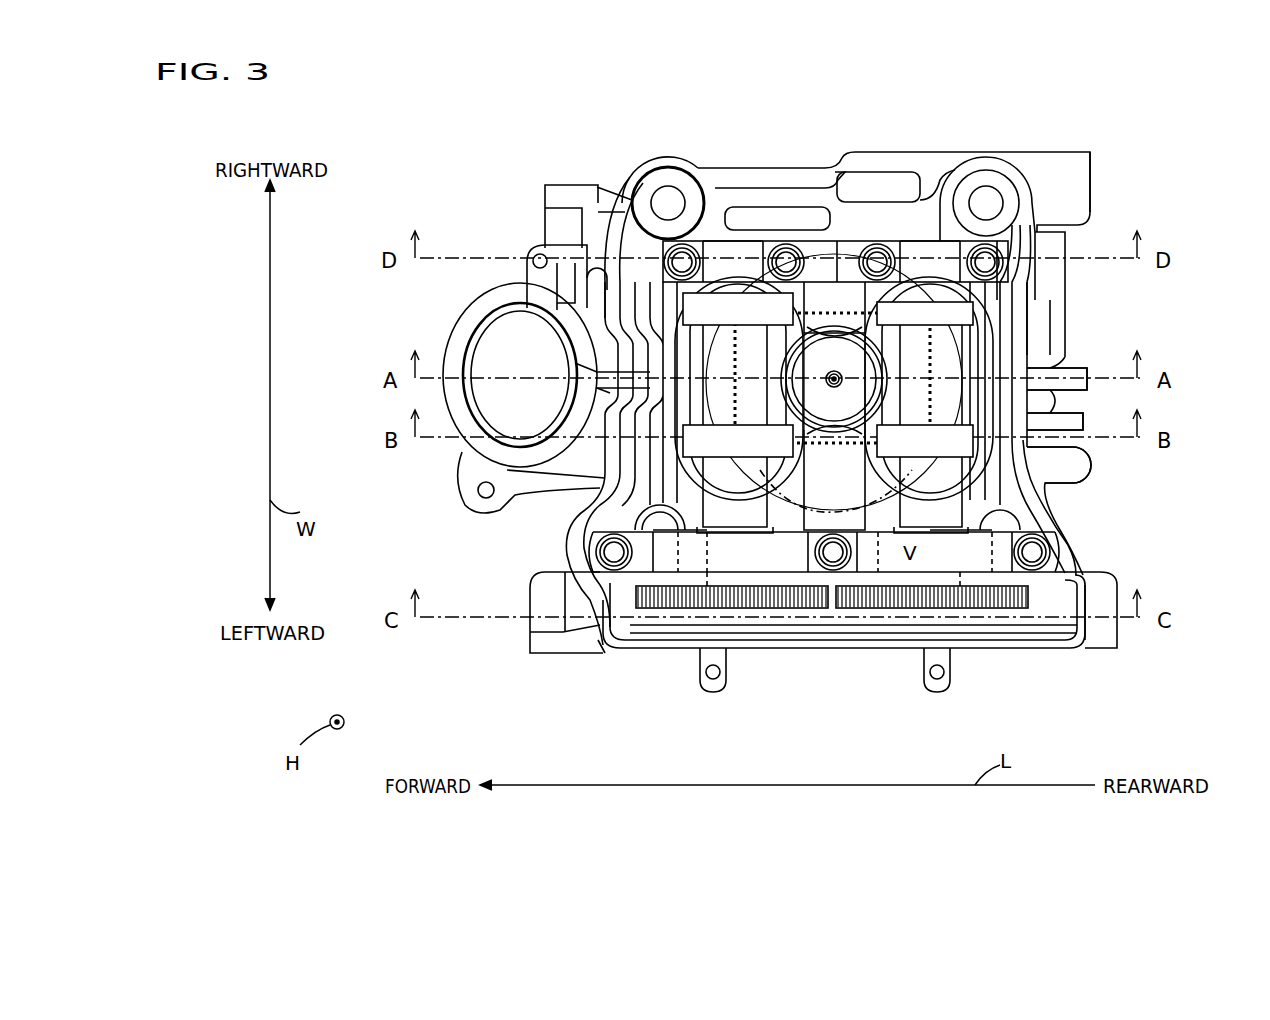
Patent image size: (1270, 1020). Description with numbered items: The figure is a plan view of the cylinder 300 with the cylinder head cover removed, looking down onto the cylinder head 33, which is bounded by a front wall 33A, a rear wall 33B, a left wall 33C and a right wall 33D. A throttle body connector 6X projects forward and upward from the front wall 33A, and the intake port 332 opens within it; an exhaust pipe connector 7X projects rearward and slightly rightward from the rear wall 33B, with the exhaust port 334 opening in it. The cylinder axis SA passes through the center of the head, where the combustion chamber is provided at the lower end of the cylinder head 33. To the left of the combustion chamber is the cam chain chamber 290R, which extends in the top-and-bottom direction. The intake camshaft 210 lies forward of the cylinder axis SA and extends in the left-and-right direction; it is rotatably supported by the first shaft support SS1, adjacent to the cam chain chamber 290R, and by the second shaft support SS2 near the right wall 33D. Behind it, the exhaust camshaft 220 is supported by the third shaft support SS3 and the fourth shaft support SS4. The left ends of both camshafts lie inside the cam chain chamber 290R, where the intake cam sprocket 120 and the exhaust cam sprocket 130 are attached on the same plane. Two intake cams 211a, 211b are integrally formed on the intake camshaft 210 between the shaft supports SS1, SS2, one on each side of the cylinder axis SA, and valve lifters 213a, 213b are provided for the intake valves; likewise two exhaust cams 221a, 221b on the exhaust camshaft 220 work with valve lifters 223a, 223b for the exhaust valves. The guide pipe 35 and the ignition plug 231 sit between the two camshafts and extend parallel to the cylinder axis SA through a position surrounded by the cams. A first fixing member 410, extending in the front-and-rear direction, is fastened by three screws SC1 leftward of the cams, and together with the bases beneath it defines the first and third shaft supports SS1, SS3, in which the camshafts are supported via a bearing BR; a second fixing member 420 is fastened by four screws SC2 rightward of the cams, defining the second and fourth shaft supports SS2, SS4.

The cylinder 300 is at (1128, 122).
The cylinder head 33 is at (597, 187).
The front wall 33A is at (620, 303).
The rear wall 33B is at (1025, 247).
The left wall 33C is at (760, 650).
The right wall 33D is at (736, 195).
The guide pipe 35 is at (853, 333).
The throttle body connector 6X is at (455, 350).
The exhaust pipe connector 7X is at (1068, 297).
The intake port 332 is at (493, 390).
The exhaust port 334 is at (1040, 333).
The intake cam sprocket 120 is at (662, 600).
The exhaust cam sprocket 130 is at (875, 600).
The intake camshaft 210 is at (750, 511).
The exhaust camshaft 220 is at (948, 511).
The intake cam 211a is at (693, 450).
The intake cam 211b is at (690, 314).
The valve lifter 213a is at (610, 393).
The valve lifter 213b is at (575, 363).
The exhaust cam 221a is at (1065, 486).
The exhaust cam 221b is at (1033, 277).
The valve lifter 223a is at (1050, 395).
The valve lifter 223b is at (1053, 358).
The ignition plug 231 is at (824, 400).
The cam chain chamber 290R is at (1040, 600).
The first fixing member 410 is at (998, 570).
The second fixing member 420 is at (848, 245).
The screws SC1 is at (610, 557).
The screws SC2 is at (682, 255).
The first shaft support SS1 is at (706, 533).
The second shaft support SS2 is at (715, 245).
The third shaft support SS3 is at (970, 533).
The fourth shaft support SS4 is at (938, 245).
The cylinder axis SA is at (828, 378).
The bearing BR is at (707, 545).